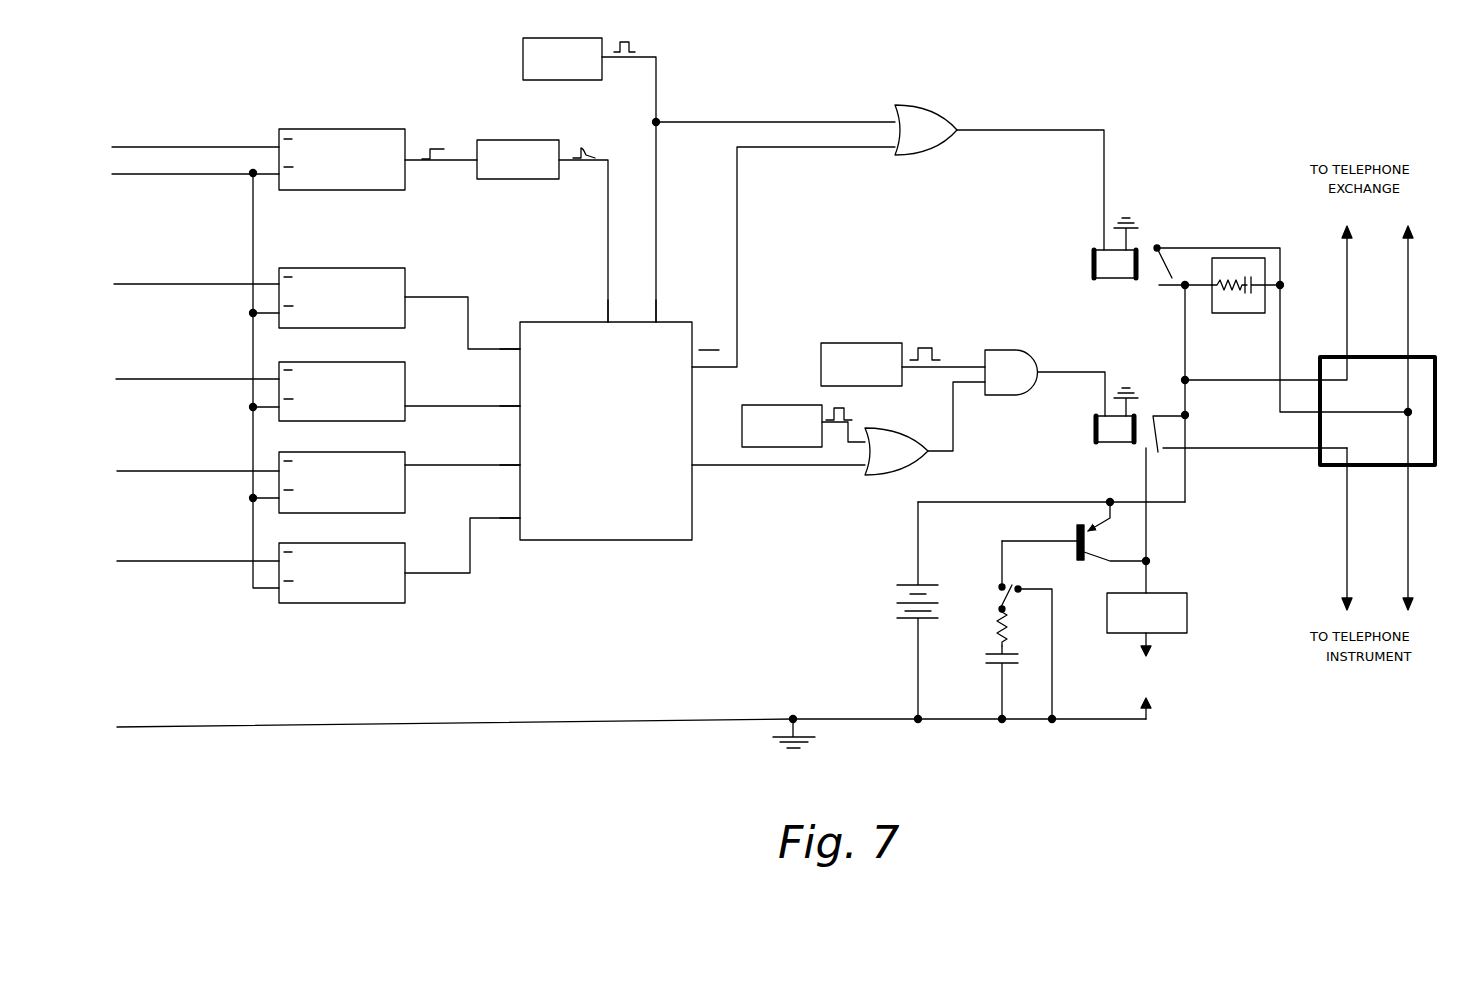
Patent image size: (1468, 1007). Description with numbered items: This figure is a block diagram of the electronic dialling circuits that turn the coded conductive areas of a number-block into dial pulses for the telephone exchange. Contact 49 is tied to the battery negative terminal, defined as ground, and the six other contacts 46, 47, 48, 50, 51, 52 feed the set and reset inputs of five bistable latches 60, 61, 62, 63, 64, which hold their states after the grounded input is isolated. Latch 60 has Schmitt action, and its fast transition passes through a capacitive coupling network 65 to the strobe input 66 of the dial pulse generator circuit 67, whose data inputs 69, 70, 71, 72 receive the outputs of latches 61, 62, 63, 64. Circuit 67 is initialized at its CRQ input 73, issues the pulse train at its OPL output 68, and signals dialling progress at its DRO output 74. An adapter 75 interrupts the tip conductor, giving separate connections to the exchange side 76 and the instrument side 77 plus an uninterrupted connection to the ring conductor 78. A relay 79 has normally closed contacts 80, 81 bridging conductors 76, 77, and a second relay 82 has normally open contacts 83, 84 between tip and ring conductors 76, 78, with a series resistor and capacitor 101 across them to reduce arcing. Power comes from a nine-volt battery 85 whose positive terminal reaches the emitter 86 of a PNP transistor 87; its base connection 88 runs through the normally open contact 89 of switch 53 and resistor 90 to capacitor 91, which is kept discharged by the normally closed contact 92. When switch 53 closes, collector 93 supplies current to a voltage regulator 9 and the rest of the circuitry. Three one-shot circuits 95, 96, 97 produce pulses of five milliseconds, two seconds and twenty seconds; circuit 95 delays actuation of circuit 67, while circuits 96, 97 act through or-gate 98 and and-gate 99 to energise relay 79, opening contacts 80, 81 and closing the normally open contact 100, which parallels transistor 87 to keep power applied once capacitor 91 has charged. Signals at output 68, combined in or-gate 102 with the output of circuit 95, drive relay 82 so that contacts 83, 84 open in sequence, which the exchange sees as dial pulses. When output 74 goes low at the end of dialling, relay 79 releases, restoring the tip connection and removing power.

The voltage regulator 9 is at (1188, 612).
The contact 46 is at (114, 284).
The contact 47 is at (116, 379).
The contact 48 is at (112, 174).
The contact 49 is at (117, 726).
The contact 50 is at (112, 147).
The contact 51 is at (117, 471).
The contact 52 is at (117, 561).
The switch 53 is at (1004, 598).
The bistable latch 60 is at (355, 140).
The bistable latch 61 is at (360, 277).
The bistable latch 62 is at (368, 371).
The bistable latch 63 is at (366, 463).
The bistable latch 64 is at (368, 555).
The capacitive coupling network 65 is at (530, 141).
The ST (strobe) input 66 is at (612, 323).
The dial pulse generator circuit 67 is at (627, 523).
The OPL output 68 is at (782, 262).
The D1 input 69 is at (520, 345).
The D2 input 70 is at (520, 402).
The D3 input 71 is at (520, 459).
The D4 input 72 is at (520, 514).
The CRQ input 73 is at (666, 323).
The DRO output 74 is at (764, 461).
The adapter 75 is at (1328, 462).
The tip conductor to telephone exchange 76 is at (1347, 290).
The tip conductor to telephone instrument 77 is at (1348, 573).
The ring conductor 78 is at (1408, 318).
The relay 79 is at (1116, 415).
The relay contact 80 is at (1155, 414).
The relay contact 81 is at (1166, 452).
The second relay 82 is at (1115, 248).
The relay contact 83 is at (1155, 282).
The relay contact 84 is at (1162, 248).
The battery 85 is at (893, 599).
The emitter 86 is at (1102, 527).
The PNP transistor 87 is at (1075, 533).
The base connection 88 is at (1072, 548).
The normally-open contact 89 is at (998, 584).
The resistor 90 is at (1010, 632).
The capacitor 91 is at (993, 667).
The normally closed contact 92 is at (1021, 592).
The collector 93 is at (1098, 565).
The one-shot circuit 95 is at (590, 40).
The one-shot circuit 96 is at (757, 405).
The one-shot circuit 97 is at (853, 351).
The or-gate 98 is at (925, 428).
The and-gate 99 is at (1045, 383).
The normally open contact 100 is at (1143, 452).
The resistor and capacitor in series 101 is at (1228, 312).
The or-gate 102 is at (999, 177).